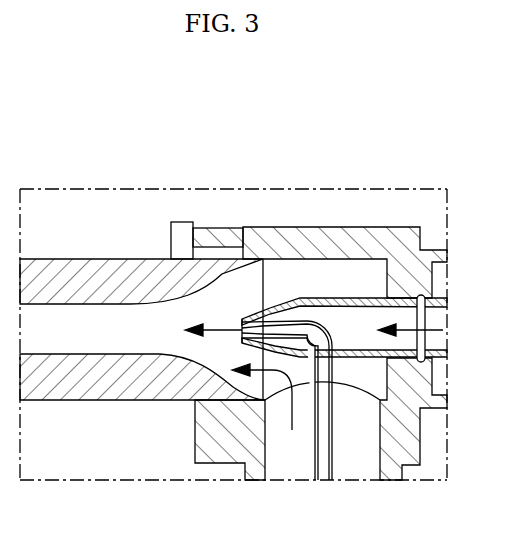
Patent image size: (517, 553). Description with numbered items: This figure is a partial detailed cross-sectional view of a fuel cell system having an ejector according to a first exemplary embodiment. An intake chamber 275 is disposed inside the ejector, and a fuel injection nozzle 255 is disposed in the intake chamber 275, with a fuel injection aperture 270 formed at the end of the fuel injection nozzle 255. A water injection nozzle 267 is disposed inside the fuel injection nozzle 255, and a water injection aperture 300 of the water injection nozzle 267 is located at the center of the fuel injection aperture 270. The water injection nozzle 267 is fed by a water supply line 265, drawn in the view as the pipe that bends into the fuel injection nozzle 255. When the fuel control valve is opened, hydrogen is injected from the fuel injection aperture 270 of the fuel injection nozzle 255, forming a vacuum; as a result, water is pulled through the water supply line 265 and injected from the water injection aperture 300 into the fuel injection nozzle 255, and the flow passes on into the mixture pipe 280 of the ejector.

The fuel injection nozzle 255 is at (362, 297).
The water supply line 265 is at (333, 452).
The water injection nozzle 267 is at (283, 327).
The fuel injection aperture 270 is at (238, 320).
The intake chamber 275 is at (330, 280).
The mixture pipe 280 is at (68, 390).
The water injection aperture 300 is at (238, 338).